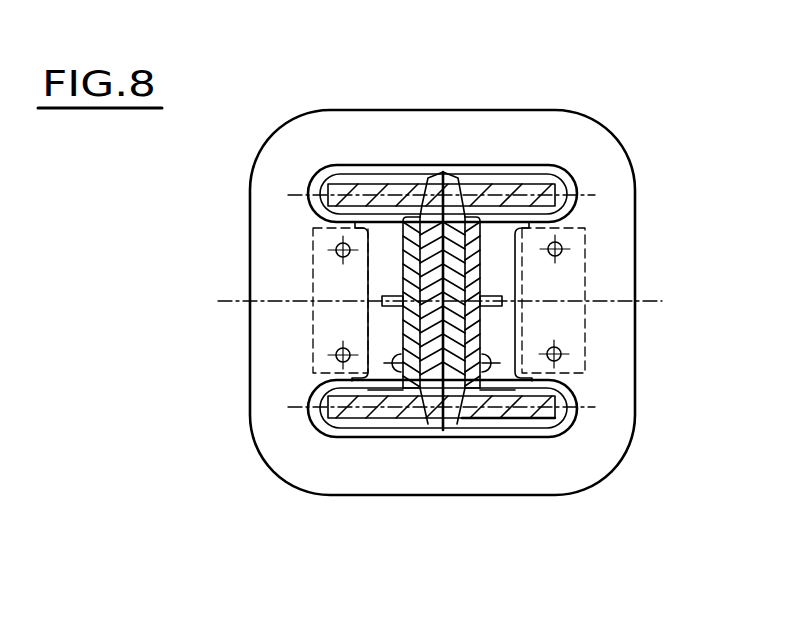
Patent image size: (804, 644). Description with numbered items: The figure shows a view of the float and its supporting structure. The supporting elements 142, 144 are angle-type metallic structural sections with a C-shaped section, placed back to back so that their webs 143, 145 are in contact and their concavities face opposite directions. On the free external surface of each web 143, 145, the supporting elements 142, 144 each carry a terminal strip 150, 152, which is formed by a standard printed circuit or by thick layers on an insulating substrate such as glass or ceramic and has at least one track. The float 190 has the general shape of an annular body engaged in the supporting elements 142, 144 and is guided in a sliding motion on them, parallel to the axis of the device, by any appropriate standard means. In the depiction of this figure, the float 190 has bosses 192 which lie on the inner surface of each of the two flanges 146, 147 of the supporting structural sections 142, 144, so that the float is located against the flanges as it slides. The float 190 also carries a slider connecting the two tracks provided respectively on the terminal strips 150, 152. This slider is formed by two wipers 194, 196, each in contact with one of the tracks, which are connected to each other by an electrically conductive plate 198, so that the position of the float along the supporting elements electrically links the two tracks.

The float 190 is at (243, 414).
The bosses 192 is at (350, 200).
The supporting element 142 is at (415, 416).
The web 143 is at (440, 188).
The supporting element 144 is at (474, 416).
The web 145 is at (461, 190).
The flange 146 is at (386, 192).
The flange 147 is at (499, 195).
The terminal strip 150 is at (403, 322).
The terminal strip 152 is at (468, 333).
The wiper 194 is at (515, 287).
The wiper 196 is at (382, 298).
The electrically conductive plate 198 is at (610, 370).